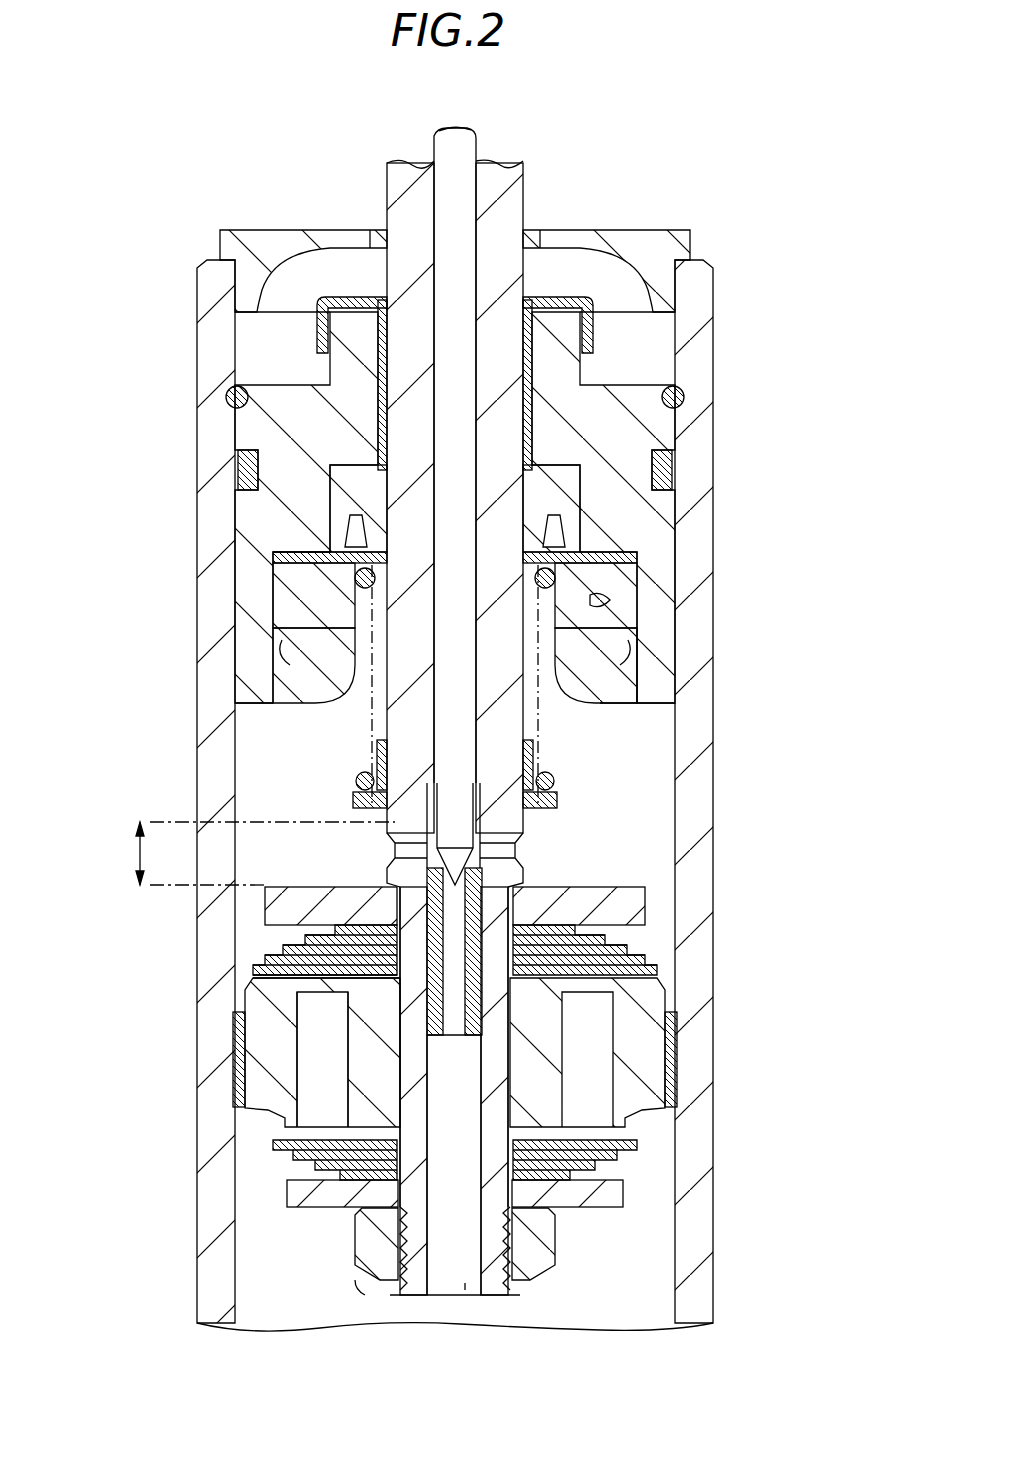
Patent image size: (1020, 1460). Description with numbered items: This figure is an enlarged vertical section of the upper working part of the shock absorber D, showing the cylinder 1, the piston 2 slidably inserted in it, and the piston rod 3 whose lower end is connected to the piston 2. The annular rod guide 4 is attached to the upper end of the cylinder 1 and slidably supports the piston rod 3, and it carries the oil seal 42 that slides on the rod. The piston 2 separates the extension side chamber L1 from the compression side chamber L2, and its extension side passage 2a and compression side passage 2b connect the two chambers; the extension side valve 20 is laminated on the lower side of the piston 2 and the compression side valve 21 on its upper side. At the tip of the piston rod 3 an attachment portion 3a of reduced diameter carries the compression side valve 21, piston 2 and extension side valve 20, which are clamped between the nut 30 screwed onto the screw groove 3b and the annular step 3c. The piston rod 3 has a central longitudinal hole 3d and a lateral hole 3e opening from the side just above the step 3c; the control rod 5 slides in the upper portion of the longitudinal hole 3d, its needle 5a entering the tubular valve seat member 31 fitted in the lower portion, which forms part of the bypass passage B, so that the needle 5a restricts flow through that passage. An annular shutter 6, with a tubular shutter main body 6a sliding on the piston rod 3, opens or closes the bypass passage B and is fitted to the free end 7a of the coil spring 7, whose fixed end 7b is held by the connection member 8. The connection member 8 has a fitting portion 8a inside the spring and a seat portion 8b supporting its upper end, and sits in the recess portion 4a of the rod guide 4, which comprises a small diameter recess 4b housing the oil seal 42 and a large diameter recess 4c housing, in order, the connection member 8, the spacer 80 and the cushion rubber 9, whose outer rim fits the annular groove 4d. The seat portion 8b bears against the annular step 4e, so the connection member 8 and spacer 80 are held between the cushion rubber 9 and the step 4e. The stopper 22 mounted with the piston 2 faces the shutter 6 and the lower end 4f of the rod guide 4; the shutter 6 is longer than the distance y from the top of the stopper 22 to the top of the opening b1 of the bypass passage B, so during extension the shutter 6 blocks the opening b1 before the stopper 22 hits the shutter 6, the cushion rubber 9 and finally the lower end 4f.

The cylinder 1 is at (205, 1243).
The piston 2 is at (676, 1113).
The extension side passage 2a is at (325, 1066).
The compression side passage 2b is at (595, 1040).
The piston rod 3 is at (524, 200).
The attachment portion 3a is at (390, 1003).
The screw groove 3b is at (395, 1245).
The annular step 3c is at (640, 916).
The longitudinal hole 3d is at (441, 1265).
The lateral hole 3e is at (500, 870).
The rod guide 4 is at (642, 384).
The recess portion 4a is at (288, 658).
The small diameter recess 4b is at (585, 500).
The large diameter recess 4c is at (640, 612).
The annular groove 4d is at (620, 694).
The annular step 4e is at (300, 553).
The lower end 4f is at (245, 701).
The control rod 5 is at (434, 139).
The needle 5a is at (450, 770).
The shutter 6 is at (432, 790).
The shutter main body 6a is at (540, 754).
The coil spring 7 is at (556, 766).
The free end 7a is at (356, 790).
The fixed end 7b is at (355, 522).
The connection member 8 is at (616, 548).
The fitting portion 8a is at (290, 596).
The seat portion 8b is at (355, 576).
The cushion rubber 9 is at (615, 655).
The extension side valve 20 is at (290, 1160).
The compression side valve 21 is at (652, 946).
The stopper 22 is at (270, 908).
The nut 30 is at (508, 1250).
The valve seat member 31 is at (275, 950).
The oil seal 42 is at (240, 470).
The spacer 80 is at (618, 580).
The bypass passage B is at (465, 1282).
The shock absorber D is at (178, 246).
The extension side chamber L1 is at (818, 838).
The compression side chamber L2 is at (799, 1256).
The opening b1 is at (385, 855).
The distance y is at (190, 853).